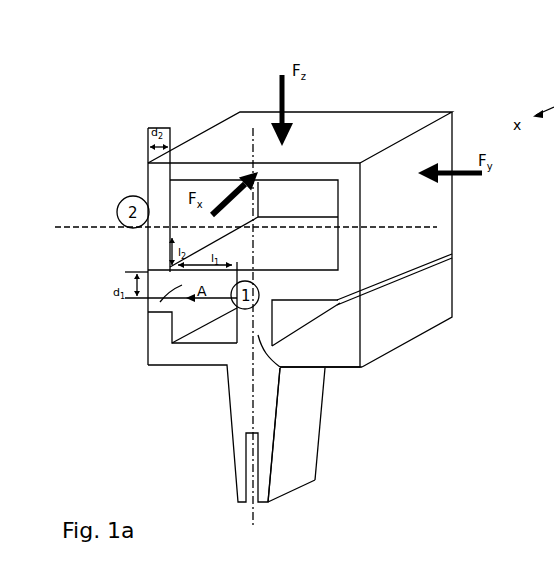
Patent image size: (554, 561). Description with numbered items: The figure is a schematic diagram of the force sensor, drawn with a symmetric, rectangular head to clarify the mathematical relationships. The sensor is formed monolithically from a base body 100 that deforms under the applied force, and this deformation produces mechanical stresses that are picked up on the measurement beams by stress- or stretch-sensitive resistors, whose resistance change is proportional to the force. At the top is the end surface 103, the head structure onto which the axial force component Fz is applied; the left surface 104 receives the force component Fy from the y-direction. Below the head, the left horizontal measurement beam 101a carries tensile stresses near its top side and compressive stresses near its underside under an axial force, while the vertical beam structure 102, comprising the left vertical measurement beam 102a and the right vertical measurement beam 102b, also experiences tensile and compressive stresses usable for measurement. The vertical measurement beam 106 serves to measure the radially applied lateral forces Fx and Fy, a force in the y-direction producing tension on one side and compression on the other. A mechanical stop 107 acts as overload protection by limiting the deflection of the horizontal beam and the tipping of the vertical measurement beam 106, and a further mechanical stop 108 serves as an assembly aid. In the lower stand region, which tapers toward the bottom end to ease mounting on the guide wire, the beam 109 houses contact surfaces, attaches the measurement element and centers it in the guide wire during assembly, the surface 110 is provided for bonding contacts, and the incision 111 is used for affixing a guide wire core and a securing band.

The base body 100 is at (186, 131).
The left horizontal measurement beam 101a is at (186, 298).
The left vertical measurement beam 102a is at (155, 250).
The right vertical measurement beam 102b is at (348, 247).
The vertical beam structure 102 is at (540, 327).
The end surface 103 is at (327, 140).
The left surface 104 is at (410, 183).
The vertical measurement beam 106 is at (317, 372).
The mechanical stop 107 is at (357, 304).
The mechanical stop 108 is at (350, 370).
The beam for housing contact surfaces 109 is at (293, 423).
The surface for bonding contacts 110 is at (248, 410).
The incision 111 is at (257, 474).